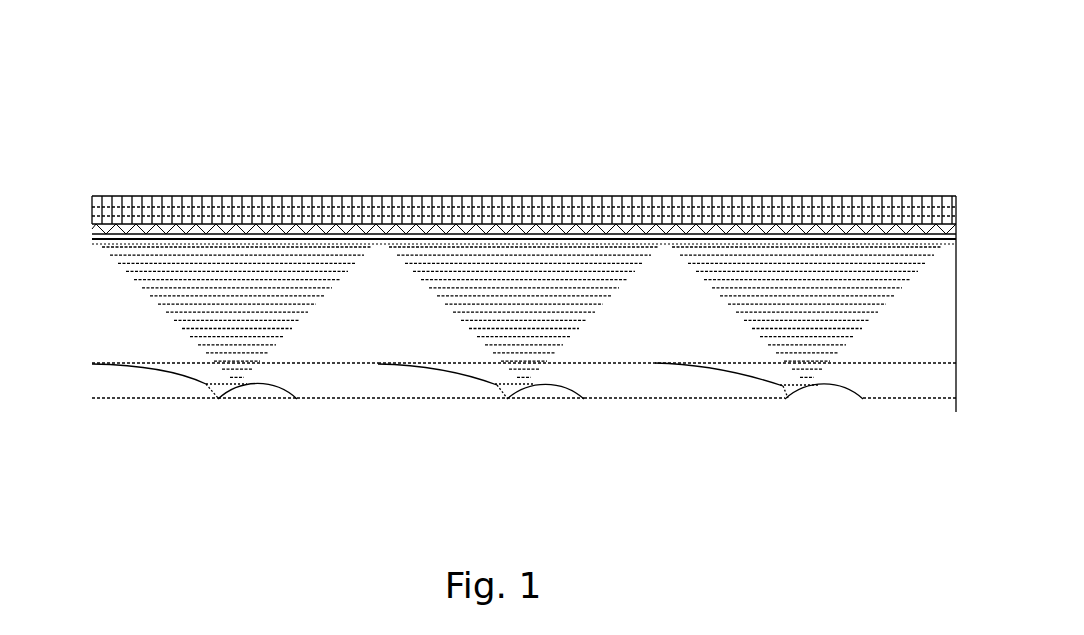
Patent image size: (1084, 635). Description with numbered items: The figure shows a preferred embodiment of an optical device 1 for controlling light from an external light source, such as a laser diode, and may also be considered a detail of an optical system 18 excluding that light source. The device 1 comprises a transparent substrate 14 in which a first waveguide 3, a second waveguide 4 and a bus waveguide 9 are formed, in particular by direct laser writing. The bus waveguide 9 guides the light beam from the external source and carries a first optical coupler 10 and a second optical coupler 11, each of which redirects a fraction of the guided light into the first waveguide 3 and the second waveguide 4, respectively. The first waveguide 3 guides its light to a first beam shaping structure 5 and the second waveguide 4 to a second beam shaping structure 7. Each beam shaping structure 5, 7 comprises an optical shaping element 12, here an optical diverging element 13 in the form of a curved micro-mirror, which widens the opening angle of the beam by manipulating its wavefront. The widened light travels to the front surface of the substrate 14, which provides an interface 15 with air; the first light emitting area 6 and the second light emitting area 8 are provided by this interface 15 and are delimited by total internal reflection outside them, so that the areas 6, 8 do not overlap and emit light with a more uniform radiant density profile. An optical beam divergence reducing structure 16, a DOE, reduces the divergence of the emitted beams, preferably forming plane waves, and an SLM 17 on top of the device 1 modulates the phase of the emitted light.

The optical device 1 is at (658, 430).
The first waveguide 3 is at (157, 370).
The second waveguide 4 is at (458, 377).
The first beam shaping structure 5 is at (222, 413).
The first light emitting area 6 is at (207, 240).
The second beam shaping structure 7 is at (517, 403).
The second light emitting area 8 is at (460, 240).
The bus waveguide 9 is at (322, 362).
The first optical coupler 10 is at (110, 367).
The second optical coupler 11 is at (388, 364).
The optical shaping element 12 is at (262, 372).
The optical diverging element 13 is at (245, 387).
The transparent substrate 14 is at (713, 342).
The interface 15 is at (513, 237).
The optical beam divergence reducing structure 16 is at (713, 230).
The SLM 17 is at (636, 212).
The optical system 18 is at (113, 122).